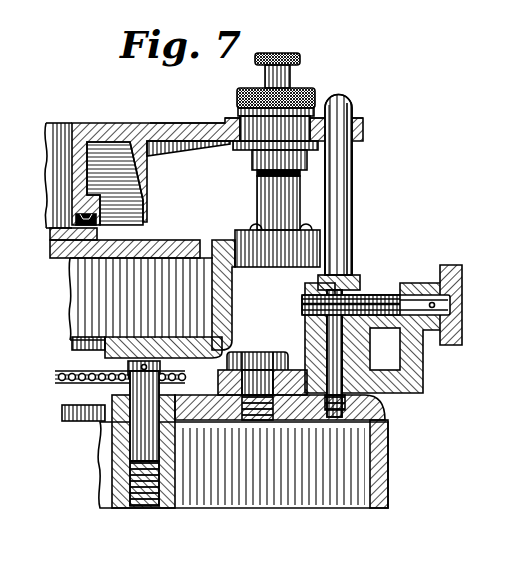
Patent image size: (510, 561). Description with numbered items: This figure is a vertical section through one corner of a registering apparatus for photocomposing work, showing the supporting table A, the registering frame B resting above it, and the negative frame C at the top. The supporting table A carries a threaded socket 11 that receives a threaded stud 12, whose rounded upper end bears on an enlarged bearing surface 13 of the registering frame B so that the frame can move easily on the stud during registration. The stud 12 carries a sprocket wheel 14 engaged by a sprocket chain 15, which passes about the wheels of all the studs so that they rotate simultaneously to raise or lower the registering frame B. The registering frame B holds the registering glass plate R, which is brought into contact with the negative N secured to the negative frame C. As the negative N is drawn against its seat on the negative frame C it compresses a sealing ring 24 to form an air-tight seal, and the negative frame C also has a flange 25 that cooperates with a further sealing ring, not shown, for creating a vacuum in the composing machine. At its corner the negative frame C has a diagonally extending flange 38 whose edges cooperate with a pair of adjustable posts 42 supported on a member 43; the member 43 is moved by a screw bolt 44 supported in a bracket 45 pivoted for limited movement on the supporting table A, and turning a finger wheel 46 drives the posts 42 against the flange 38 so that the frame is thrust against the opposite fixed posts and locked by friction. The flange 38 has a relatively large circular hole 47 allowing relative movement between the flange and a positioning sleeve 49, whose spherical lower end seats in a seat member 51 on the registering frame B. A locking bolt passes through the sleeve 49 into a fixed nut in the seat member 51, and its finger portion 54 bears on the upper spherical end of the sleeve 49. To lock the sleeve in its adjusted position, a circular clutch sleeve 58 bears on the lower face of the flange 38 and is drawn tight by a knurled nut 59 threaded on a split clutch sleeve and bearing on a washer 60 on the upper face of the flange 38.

The supporting table A is at (388, 463).
The registering frame B is at (232, 308).
The negative frame C is at (85, 124).
The negative N is at (50, 234).
The registering glass plate R is at (55, 252).
The threaded socket 11 is at (160, 450).
The threaded stud 12 is at (172, 398).
The enlarged bearing surface 13 is at (178, 359).
The sprocket wheel 14 is at (112, 385).
The sprocket chain 15 is at (60, 377).
The sealing ring 24 is at (94, 222).
The flange 25 is at (145, 203).
The diagonally extending flange 38 is at (178, 123).
The adjustable post 42 is at (345, 190).
The member 43 is at (365, 294).
The screw bolt 44 is at (397, 294).
The bracket 45 is at (405, 394).
The finger wheel 46 is at (450, 345).
The circular hole 47 is at (318, 118).
The positioning sleeve 49 is at (291, 76).
The seat member 51 is at (258, 202).
The finger portion 54 is at (283, 54).
The circular clutch sleeve 58 is at (253, 158).
The knurled nut 59 is at (240, 90).
The washer 60 is at (240, 115).